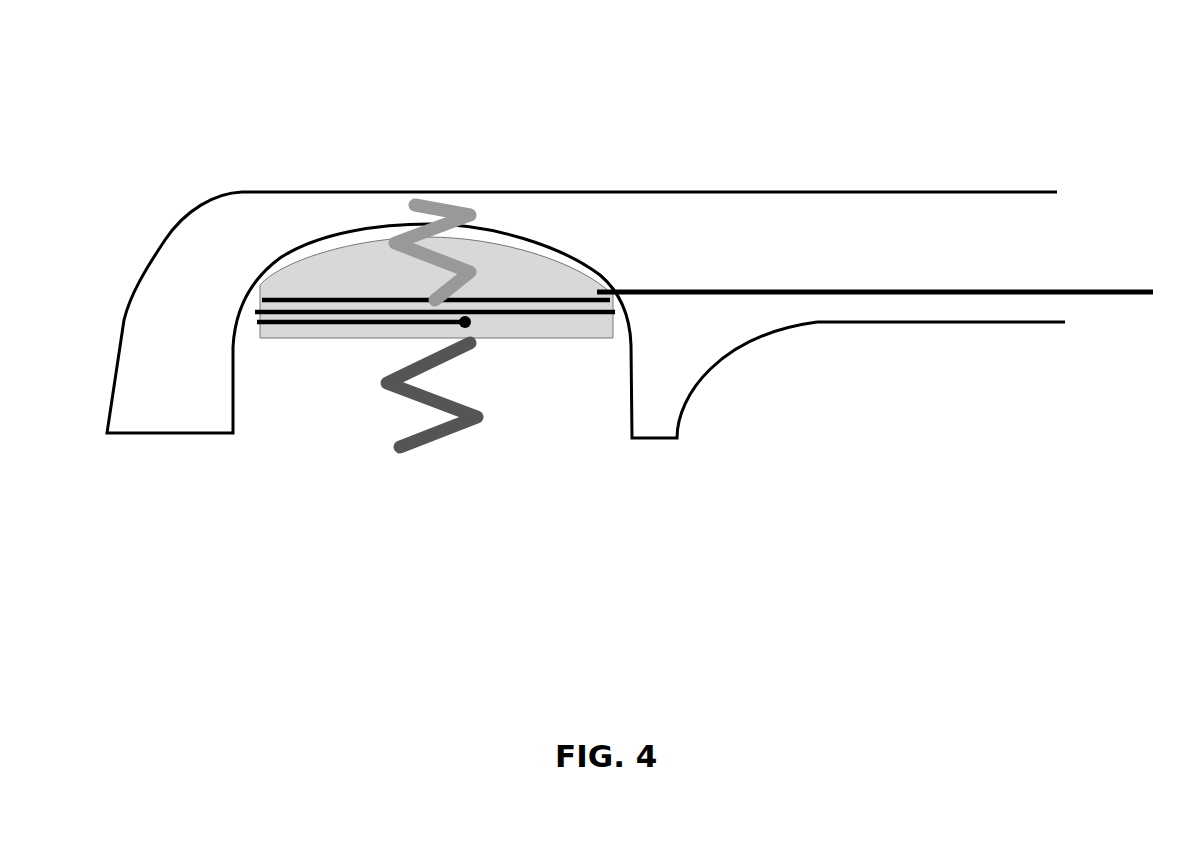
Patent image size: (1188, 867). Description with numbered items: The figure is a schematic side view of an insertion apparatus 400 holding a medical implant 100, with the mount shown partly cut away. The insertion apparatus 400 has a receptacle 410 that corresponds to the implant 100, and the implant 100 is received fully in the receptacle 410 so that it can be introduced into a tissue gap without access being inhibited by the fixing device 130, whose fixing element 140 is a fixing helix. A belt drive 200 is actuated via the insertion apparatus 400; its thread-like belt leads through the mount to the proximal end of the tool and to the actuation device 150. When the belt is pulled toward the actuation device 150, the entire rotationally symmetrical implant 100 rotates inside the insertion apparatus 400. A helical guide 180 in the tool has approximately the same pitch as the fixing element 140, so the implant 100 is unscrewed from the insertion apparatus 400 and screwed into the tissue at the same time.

The medical implant 100 is at (565, 335).
The fixing device 130 is at (464, 451).
The fixing element 140 is at (435, 443).
The actuation device 150 is at (313, 297).
The helical guide 180 is at (458, 200).
The belt drive 200 is at (875, 367).
The insertion apparatus 400 is at (185, 258).
The receptacle 410 is at (276, 391).